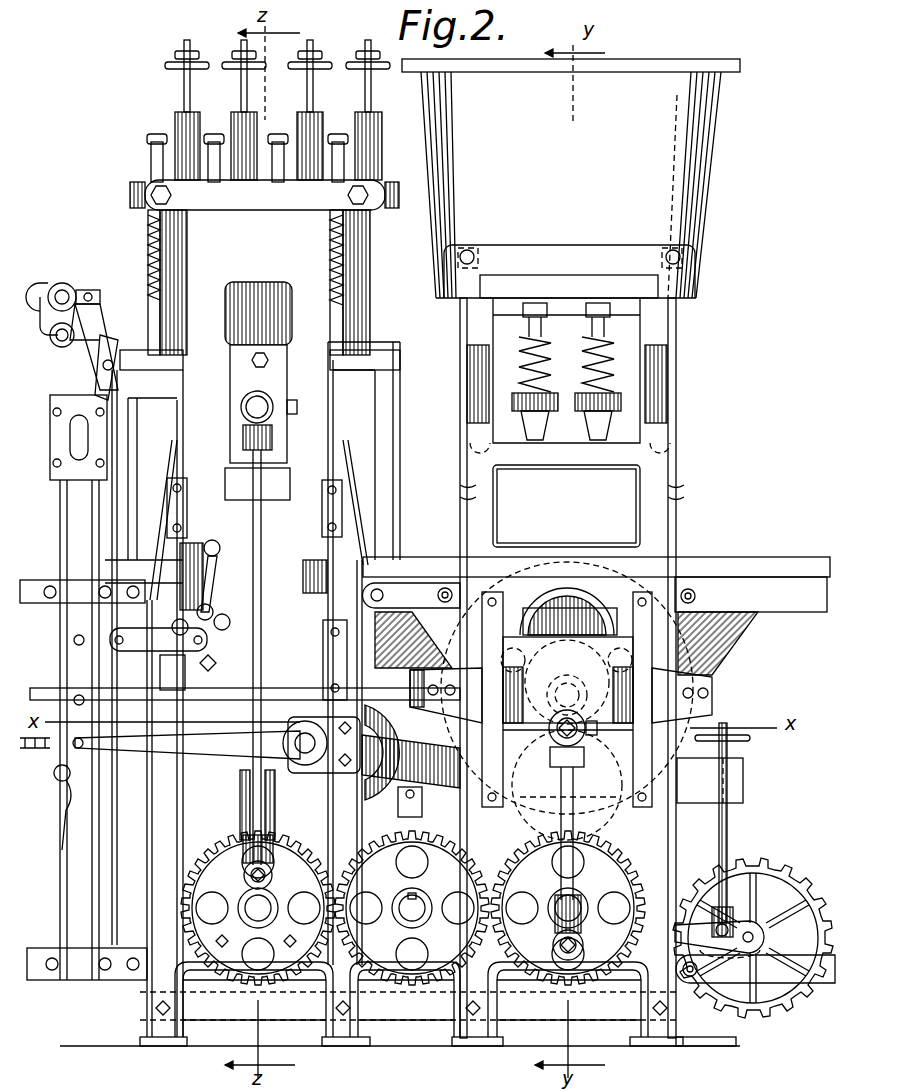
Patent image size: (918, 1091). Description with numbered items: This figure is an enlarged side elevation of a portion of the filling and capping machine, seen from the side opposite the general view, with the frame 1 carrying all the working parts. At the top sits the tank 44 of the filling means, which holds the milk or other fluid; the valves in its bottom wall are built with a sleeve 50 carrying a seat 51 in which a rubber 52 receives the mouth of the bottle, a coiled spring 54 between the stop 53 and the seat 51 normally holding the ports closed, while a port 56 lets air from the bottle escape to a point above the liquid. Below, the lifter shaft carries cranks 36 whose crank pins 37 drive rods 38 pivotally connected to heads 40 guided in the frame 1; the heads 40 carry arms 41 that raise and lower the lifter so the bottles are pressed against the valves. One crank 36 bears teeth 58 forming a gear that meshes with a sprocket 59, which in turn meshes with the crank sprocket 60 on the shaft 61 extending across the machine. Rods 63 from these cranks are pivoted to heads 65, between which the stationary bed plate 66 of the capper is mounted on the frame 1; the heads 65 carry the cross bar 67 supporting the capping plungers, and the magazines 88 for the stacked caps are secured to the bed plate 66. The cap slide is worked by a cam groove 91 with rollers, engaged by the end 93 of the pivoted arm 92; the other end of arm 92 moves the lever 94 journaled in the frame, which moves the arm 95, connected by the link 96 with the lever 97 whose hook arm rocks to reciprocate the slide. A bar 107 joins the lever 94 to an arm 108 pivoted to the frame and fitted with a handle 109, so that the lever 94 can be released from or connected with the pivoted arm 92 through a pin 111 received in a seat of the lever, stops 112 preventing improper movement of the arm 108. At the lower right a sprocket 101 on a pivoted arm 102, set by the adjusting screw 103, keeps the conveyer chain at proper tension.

The frame 1 is at (745, 578).
The cranks 36 is at (586, 945).
The crank pins 37 is at (565, 955).
The rods 38 is at (573, 870).
The heads 40 is at (714, 700).
The arms 41 is at (573, 643).
The tank 44 is at (726, 215).
The sleeve 50 is at (566, 350).
The seat 51 is at (618, 398).
The rubber 52 is at (520, 420).
The stop 53 is at (610, 340).
The coiled spring 54 is at (612, 362).
The port 56 is at (580, 440).
The teeth 58 is at (585, 980).
The sprocket 59 is at (412, 908).
The crank sprocket 60 is at (283, 960).
The shaft 61 is at (248, 876).
The rods 63 is at (265, 550).
The heads 65 is at (230, 358).
The stationary bed plate 66 is at (388, 375).
The cross bar 67 is at (383, 210).
The magazines 88 is at (375, 290).
The cam groove 91 is at (640, 636).
The pivoted arm 92 is at (440, 752).
The end 93 is at (710, 780).
The lever 94 is at (75, 610).
The arm 95 is at (95, 372).
The link 96 is at (100, 330).
The lever 97 is at (63, 302).
The sprocket 101 is at (780, 865).
The pivoted arm 102 is at (719, 936).
The adjusting screw 103 is at (730, 848).
The bar 107 is at (158, 640).
The arm 108 is at (210, 590).
The handle 109 is at (213, 545).
The pin 111 is at (36, 759).
The stops 112 is at (228, 618).